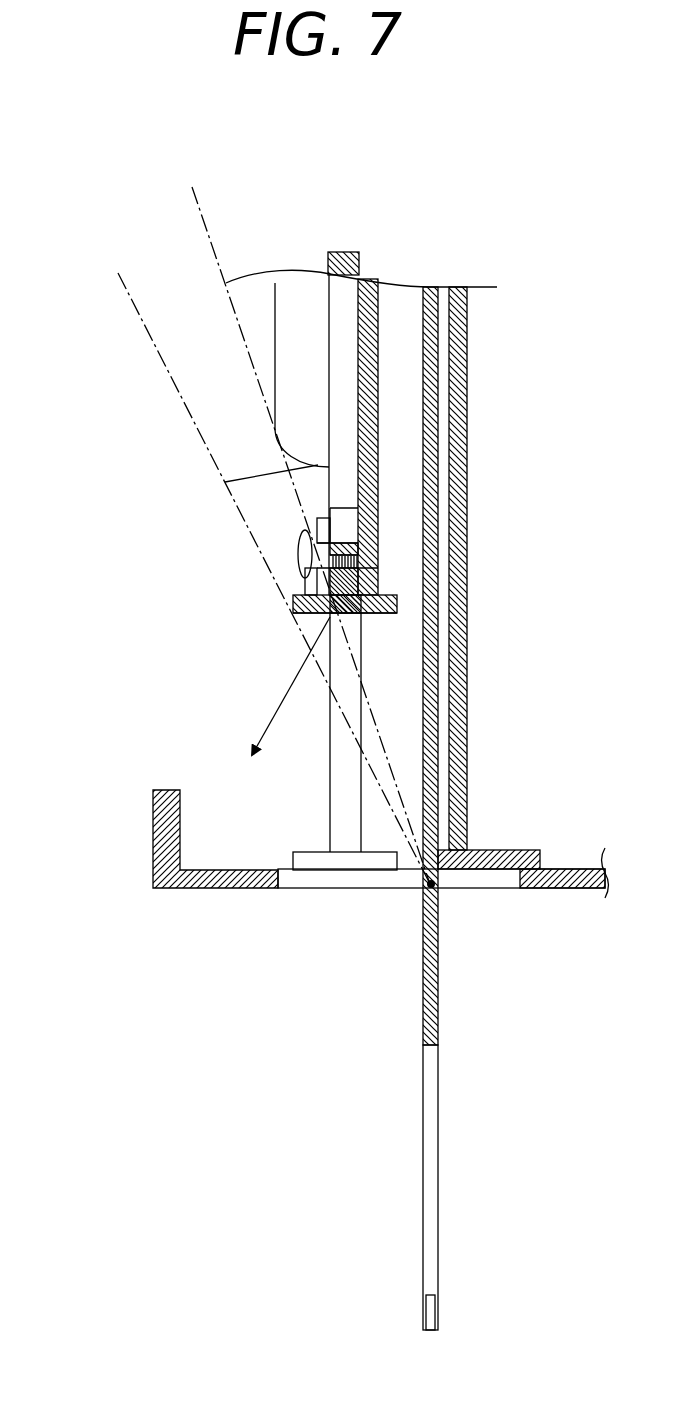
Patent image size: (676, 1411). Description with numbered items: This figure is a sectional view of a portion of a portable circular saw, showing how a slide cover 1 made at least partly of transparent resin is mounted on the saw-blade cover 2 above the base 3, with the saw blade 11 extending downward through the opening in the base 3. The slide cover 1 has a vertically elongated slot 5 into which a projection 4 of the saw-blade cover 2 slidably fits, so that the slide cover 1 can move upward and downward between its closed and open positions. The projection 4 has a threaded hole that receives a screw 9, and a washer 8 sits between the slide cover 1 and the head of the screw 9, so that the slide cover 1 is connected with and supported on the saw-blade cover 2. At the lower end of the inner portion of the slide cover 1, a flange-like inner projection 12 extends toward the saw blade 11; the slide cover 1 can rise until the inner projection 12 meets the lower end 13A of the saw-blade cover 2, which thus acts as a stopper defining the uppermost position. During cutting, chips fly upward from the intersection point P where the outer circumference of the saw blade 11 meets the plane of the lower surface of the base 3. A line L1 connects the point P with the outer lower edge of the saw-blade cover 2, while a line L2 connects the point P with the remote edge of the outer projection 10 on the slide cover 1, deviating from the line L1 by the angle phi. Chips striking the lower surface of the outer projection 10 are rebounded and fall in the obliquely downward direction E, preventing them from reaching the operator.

The slide cover 1 is at (358, 253).
The saw-blade cover 2 is at (378, 300).
The base 3 is at (152, 880).
The projection 4 is at (357, 501).
The slot 5 is at (334, 385).
The washer 8 is at (315, 512).
The screw 9 is at (298, 566).
The outer projection 10 is at (330, 613).
The saw blade 11 is at (436, 995).
The inner projection 12 is at (395, 597).
The lower end of the saw-blade cover 13A is at (380, 572).
The intersection point P is at (468, 850).
The obliquely downward direction E is at (277, 696).
The line L1 is at (208, 226).
The line L2 is at (157, 353).
The given angle phi is at (271, 459).